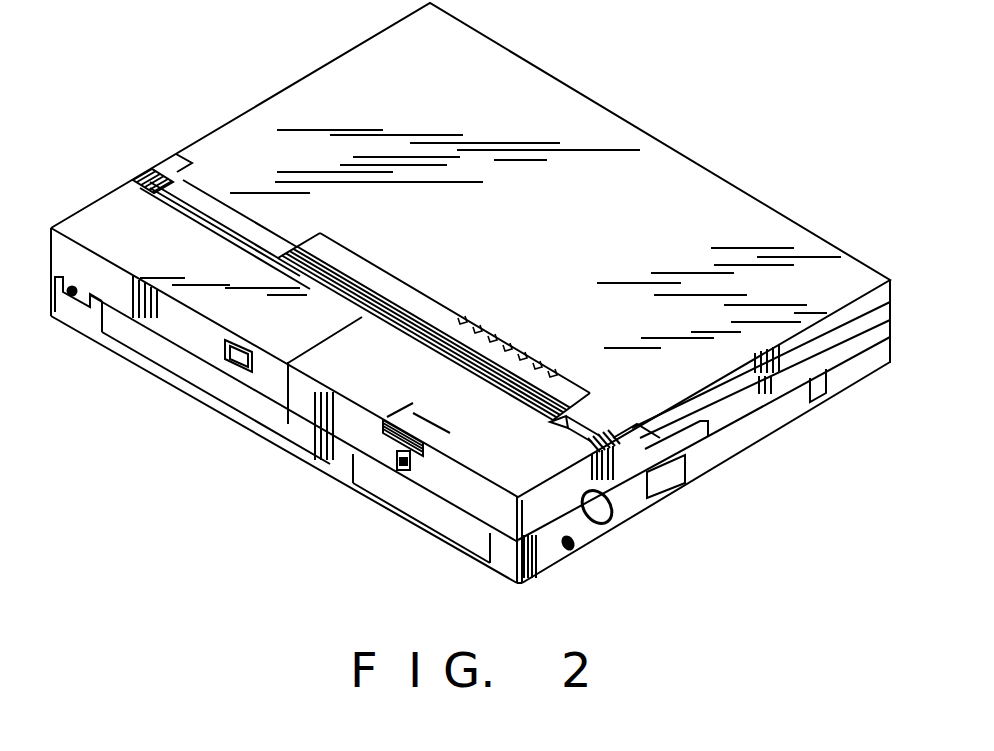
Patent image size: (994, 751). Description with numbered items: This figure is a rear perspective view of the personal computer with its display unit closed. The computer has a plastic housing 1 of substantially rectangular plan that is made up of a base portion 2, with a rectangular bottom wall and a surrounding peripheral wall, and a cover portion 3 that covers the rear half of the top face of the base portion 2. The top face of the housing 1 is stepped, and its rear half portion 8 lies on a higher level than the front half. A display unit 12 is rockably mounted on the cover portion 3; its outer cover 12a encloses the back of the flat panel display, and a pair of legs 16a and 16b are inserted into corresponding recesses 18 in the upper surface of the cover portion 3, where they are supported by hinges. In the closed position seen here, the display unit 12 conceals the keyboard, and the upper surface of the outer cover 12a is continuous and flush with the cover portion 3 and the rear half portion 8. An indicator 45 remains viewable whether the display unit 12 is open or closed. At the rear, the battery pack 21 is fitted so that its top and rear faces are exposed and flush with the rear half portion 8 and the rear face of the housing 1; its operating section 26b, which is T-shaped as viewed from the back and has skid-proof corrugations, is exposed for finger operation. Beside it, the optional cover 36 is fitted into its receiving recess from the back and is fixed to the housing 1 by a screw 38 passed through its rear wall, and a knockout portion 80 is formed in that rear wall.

The housing 1 is at (808, 432).
The base portion 2 is at (711, 457).
The cover portion 3 is at (330, 265).
The rear half portion 8 is at (376, 292).
The display unit 12 is at (686, 196).
The outer cover 12a is at (517, 70).
The leg 16a is at (567, 437).
The leg 16b is at (217, 212).
The recess 18 is at (164, 178).
The battery pack 21 is at (487, 510).
The operating section 26b is at (382, 438).
The optional cover 36 is at (118, 222).
The screw 38 is at (70, 298).
The indicator 45 is at (520, 362).
The knockout portion 80 is at (235, 373).